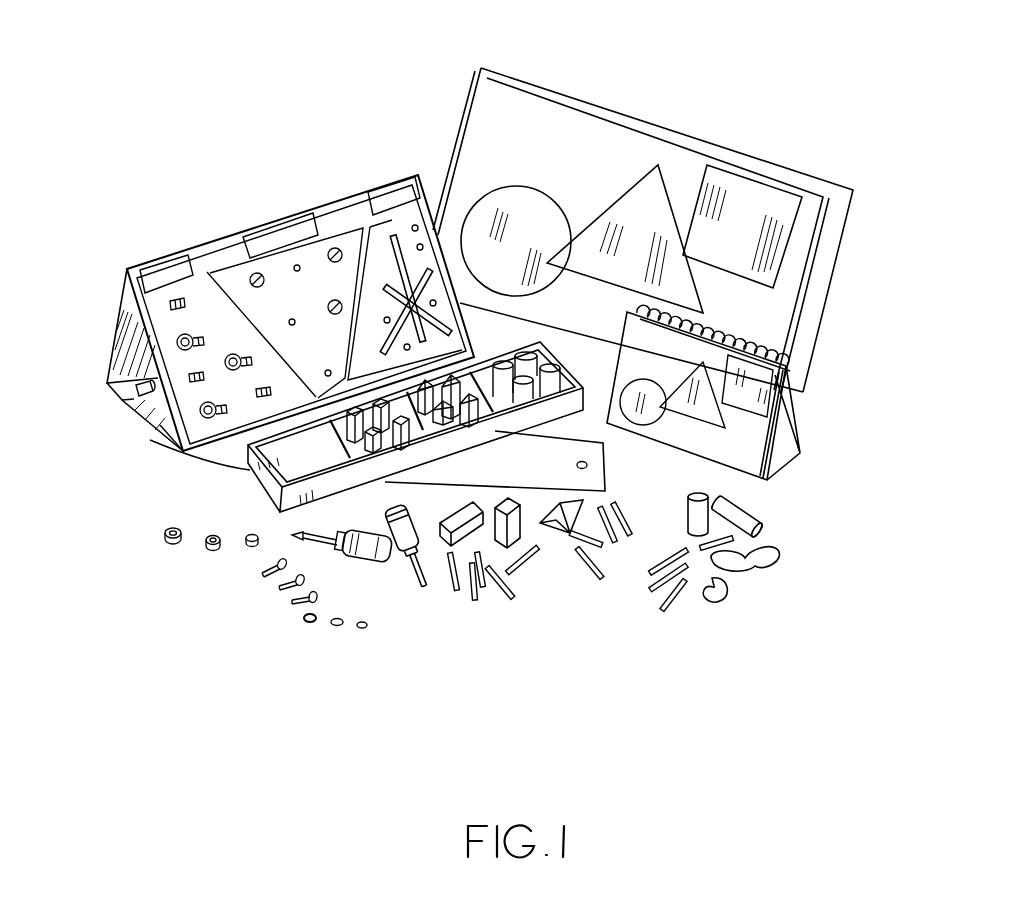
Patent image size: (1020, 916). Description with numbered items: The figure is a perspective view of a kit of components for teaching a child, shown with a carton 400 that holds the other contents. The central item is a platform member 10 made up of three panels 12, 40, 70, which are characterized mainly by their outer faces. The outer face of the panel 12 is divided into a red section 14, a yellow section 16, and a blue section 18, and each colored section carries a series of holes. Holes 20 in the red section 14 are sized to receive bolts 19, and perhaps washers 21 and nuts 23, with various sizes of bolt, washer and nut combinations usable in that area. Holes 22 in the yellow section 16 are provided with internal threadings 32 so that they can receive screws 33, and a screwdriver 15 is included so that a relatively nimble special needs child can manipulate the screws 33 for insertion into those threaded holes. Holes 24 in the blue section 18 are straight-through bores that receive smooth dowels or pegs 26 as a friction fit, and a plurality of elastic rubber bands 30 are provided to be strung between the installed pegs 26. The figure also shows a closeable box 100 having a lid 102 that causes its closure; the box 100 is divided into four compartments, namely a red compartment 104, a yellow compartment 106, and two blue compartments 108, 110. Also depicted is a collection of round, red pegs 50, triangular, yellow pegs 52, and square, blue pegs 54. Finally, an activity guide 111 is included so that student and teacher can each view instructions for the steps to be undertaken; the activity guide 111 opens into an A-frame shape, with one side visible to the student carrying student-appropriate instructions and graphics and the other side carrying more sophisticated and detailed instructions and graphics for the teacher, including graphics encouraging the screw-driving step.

The platform member 10 is at (147, 290).
The panel 12 is at (217, 257).
The red section 14 is at (160, 263).
The screwdriver 15 is at (367, 560).
The yellow section 16 is at (323, 220).
The blue section 18 is at (426, 190).
The bolts 19 is at (173, 307).
The holes 20 is at (182, 347).
The washers 21 is at (203, 417).
The holes 22 is at (291, 325).
The nuts 23 is at (177, 570).
The holes 24 is at (479, 66).
The pegs 26 is at (415, 228).
The rubber bands 30 is at (422, 247).
The internal threadings 32 is at (297, 265).
The screws 33 is at (337, 248).
The panel 40 is at (118, 307).
The round, red pegs 50 is at (750, 505).
The triangular, yellow pegs 52 is at (583, 500).
The square, blue pegs 54 is at (433, 403).
The panel 70 is at (150, 425).
The closeable box 100 is at (312, 482).
The lid 102 is at (592, 455).
The red compartment 104 is at (435, 380).
The yellow compartment 106 is at (540, 550).
The blue compartment 108 is at (392, 437).
The blue compartment 110 is at (295, 465).
The activity guide 111 is at (760, 435).
The carton 400 is at (755, 172).